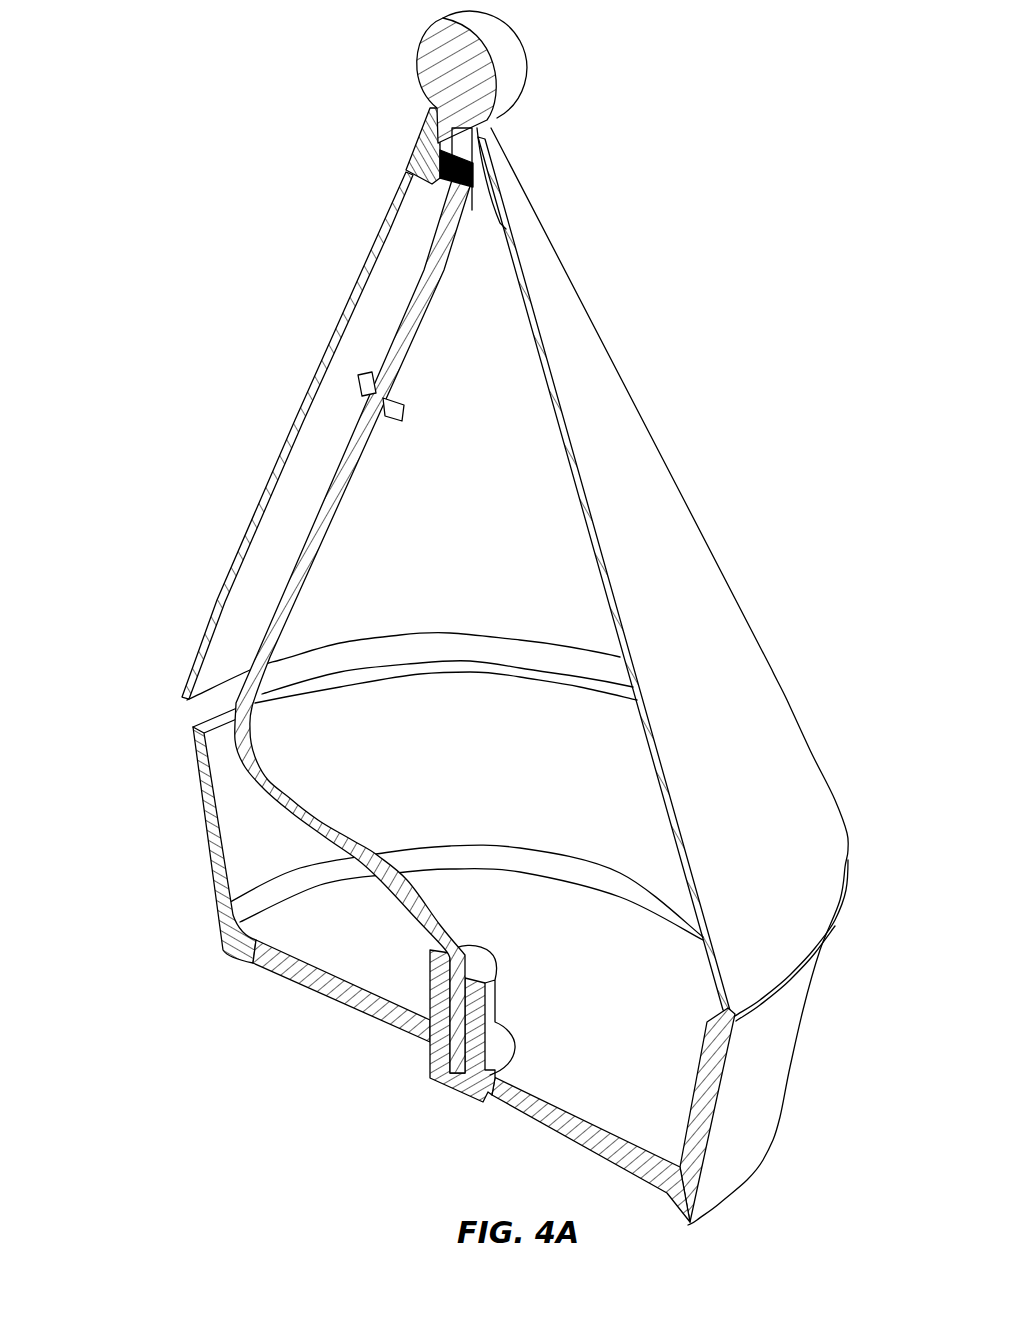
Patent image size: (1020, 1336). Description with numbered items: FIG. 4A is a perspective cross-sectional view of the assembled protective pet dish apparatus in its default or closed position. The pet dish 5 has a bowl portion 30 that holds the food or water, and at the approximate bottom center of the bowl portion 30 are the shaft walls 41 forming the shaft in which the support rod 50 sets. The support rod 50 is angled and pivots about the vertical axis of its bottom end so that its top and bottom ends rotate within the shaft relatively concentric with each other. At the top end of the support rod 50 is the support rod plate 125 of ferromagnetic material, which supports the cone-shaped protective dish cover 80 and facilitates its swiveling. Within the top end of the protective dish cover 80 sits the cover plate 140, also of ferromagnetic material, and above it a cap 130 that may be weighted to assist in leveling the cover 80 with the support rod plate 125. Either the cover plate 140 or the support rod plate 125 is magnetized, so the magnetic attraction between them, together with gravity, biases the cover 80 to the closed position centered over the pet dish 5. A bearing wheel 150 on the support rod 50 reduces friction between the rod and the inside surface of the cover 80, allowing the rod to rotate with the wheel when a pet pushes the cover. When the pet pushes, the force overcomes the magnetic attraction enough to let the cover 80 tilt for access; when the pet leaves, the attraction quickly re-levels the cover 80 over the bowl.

The pet dish 5 is at (188, 827).
The bowl portion 30 is at (350, 937).
The shaft walls 41 is at (437, 1003).
The support rod 50 is at (300, 540).
The protective dish cover 80 is at (722, 434).
The support rod plate 125 is at (477, 213).
The cap 130 is at (482, 75).
The cover plate 140 is at (480, 167).
The bearing wheel 150 is at (357, 380).